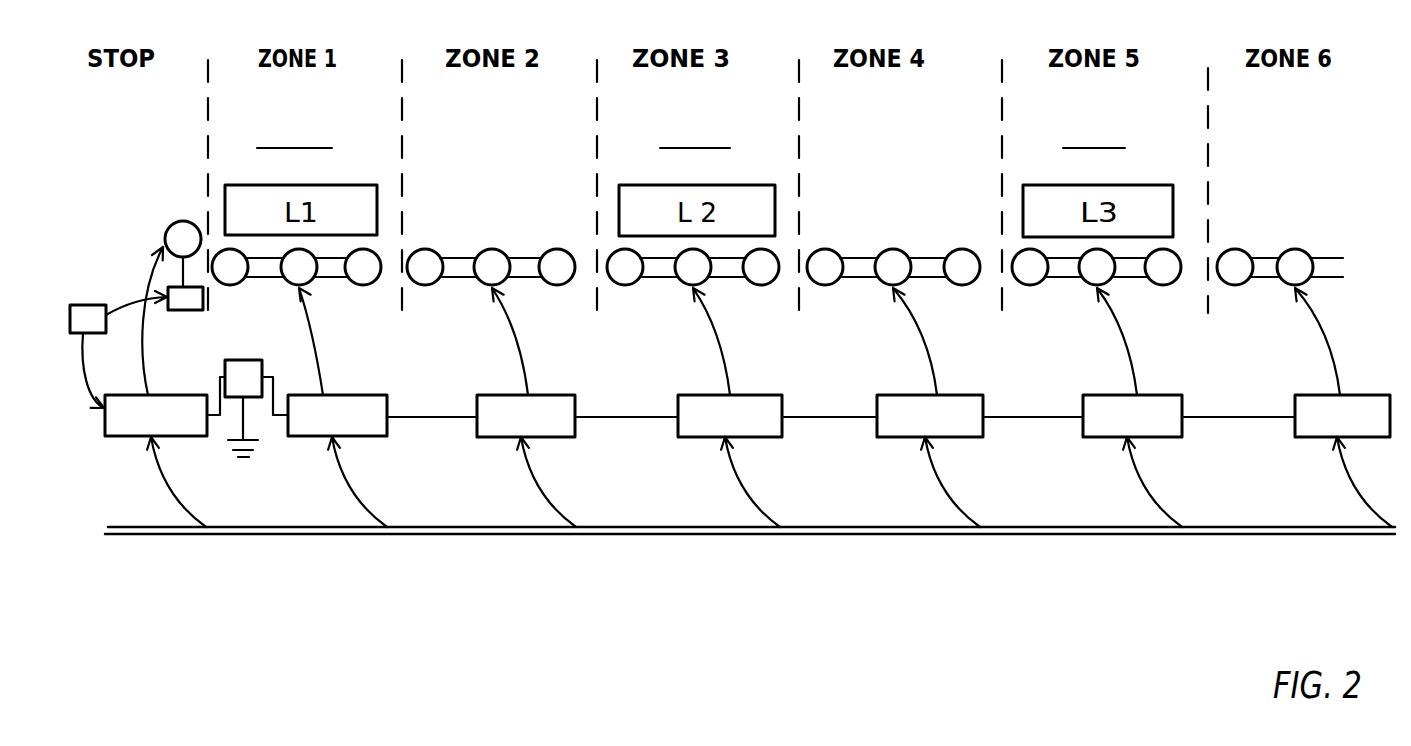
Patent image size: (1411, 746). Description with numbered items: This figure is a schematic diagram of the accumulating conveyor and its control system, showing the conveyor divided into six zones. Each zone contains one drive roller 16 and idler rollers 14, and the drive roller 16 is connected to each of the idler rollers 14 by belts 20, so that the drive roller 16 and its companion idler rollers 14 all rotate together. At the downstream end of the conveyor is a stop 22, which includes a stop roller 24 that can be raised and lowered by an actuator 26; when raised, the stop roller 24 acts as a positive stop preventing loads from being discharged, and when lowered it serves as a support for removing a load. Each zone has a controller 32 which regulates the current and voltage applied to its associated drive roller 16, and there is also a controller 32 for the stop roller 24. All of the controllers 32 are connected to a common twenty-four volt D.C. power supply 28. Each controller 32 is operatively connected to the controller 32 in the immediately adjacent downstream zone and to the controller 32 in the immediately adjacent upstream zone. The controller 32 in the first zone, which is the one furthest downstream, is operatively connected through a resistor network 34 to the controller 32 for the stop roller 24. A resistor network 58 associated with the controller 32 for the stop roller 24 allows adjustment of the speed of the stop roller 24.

The idler roller 14 is at (362, 287).
The drive roller 16 is at (308, 282).
The belt 20 is at (263, 279).
The stop 22 is at (104, 250).
The stop roller 24 is at (166, 236).
The actuator 26 is at (182, 310).
The power supply 28 is at (413, 535).
The controller 32 is at (163, 395).
The resistor network 34 is at (247, 408).
The resistor network 58 is at (93, 305).